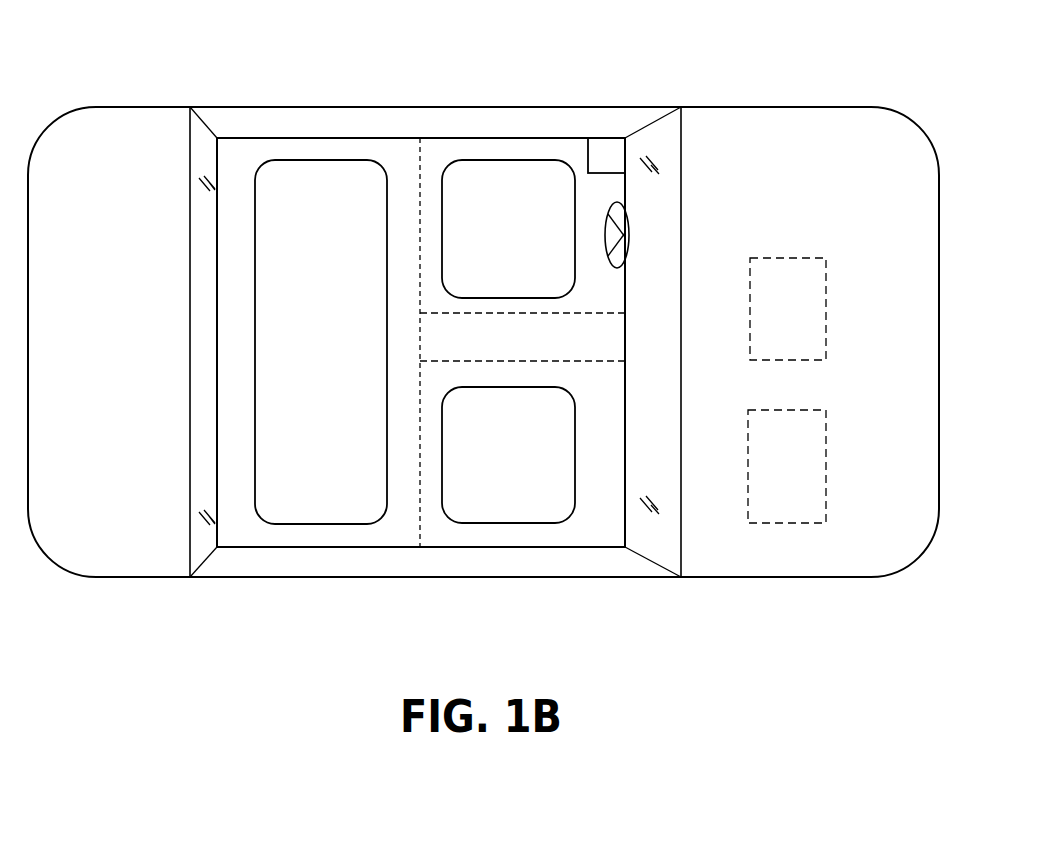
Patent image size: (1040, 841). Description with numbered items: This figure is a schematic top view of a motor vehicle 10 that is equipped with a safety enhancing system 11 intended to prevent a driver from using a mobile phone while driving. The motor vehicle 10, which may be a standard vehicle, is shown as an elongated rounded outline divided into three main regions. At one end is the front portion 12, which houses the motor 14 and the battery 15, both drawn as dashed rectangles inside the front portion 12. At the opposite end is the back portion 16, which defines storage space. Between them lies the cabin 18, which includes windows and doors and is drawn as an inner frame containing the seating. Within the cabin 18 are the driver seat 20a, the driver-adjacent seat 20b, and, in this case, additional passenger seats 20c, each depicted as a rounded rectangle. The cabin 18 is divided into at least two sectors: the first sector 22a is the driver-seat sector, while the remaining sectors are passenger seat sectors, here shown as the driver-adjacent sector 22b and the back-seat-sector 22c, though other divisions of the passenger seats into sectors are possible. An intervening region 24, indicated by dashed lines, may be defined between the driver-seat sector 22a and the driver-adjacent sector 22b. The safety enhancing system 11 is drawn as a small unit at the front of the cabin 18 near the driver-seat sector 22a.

The motor vehicle 10 is at (860, 83).
The safety enhancing system 11 is at (612, 135).
The front portion 12 is at (843, 565).
The motor 14 is at (826, 309).
The battery 15 is at (826, 467).
The back portion 16 is at (92, 197).
The cabin 18 is at (485, 105).
The driver seat 20a is at (545, 200).
The driver-adjacent seat 20b is at (510, 502).
The additional passenger seats 20c is at (315, 468).
The first sector 22a is at (437, 162).
The driver-adjacent sector 22b is at (597, 522).
The back-seat-sector 22c is at (248, 160).
The intervening region 24 is at (568, 342).